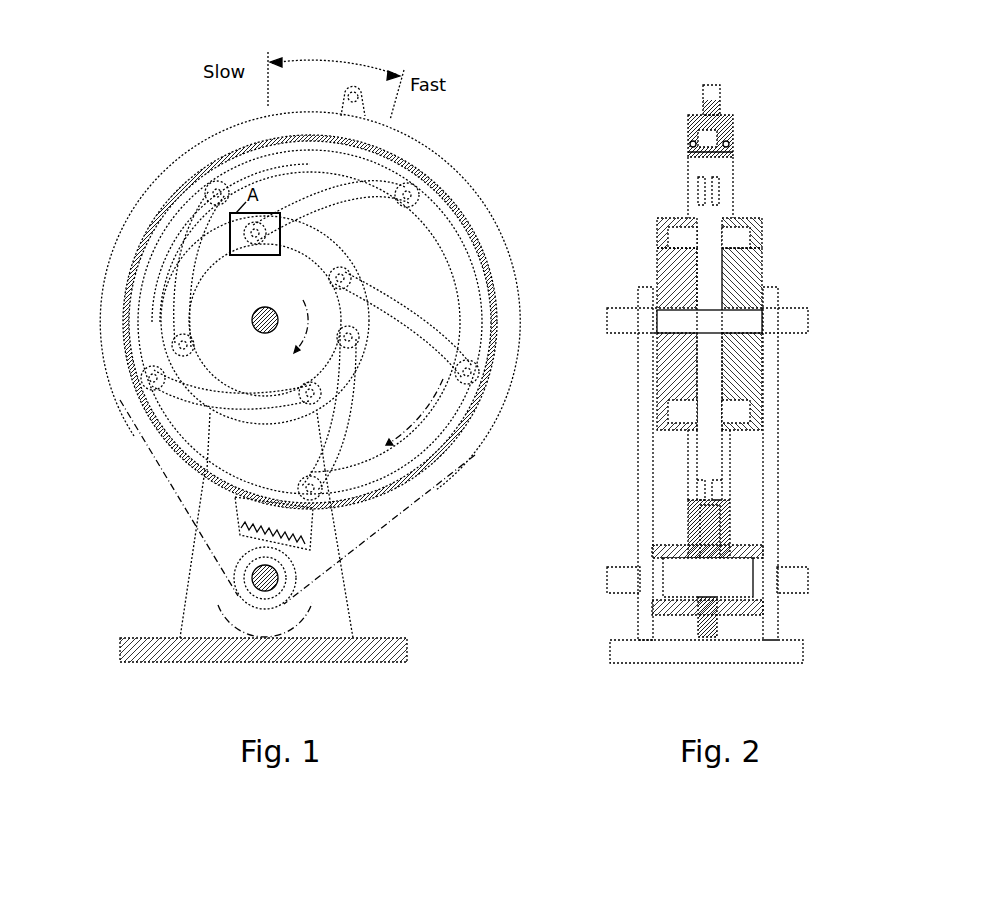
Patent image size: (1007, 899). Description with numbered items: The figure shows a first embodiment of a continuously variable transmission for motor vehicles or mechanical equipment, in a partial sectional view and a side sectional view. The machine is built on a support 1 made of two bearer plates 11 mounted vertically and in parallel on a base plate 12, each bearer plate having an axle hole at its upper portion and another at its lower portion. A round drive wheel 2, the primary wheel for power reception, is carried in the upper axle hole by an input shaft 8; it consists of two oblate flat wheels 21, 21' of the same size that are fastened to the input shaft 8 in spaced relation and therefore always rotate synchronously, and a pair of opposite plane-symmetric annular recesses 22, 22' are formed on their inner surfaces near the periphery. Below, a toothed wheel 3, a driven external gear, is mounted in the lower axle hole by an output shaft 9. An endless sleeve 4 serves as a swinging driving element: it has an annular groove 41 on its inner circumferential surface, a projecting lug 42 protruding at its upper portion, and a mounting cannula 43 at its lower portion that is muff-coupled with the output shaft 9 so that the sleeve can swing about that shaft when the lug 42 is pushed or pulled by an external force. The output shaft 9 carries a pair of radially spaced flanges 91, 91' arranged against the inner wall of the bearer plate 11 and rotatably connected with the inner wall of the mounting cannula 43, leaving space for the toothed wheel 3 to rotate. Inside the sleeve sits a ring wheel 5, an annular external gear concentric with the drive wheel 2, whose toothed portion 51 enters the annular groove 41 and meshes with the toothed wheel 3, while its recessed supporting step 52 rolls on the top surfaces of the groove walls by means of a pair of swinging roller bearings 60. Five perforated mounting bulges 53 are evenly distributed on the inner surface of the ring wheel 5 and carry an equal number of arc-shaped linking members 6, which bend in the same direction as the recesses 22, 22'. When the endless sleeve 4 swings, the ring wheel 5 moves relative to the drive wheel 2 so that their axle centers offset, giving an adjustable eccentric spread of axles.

In FIG. 2, the support 1 is at (793, 407).
In FIG. 1, the drive wheel 2 is at (350, 257).
In FIG. 2, the drive wheel 2 is at (657, 236).
In FIG. 1, the toothed wheel 3 is at (222, 595).
In FIG. 2, the toothed wheel 3 is at (705, 550).
In FIG. 1, the endless sleeve 4 is at (335, 545).
In FIG. 2, the endless sleeve 4 is at (692, 123).
In FIG. 1, the ring wheel 5 is at (272, 503).
In FIG. 2, the ring wheel 5 is at (688, 178).
In FIG. 1, the linking members 6 is at (348, 452).
In FIG. 2, the input shaft 8 is at (612, 313).
In FIG. 2, the output shaft 9 is at (607, 585).
In FIG. 2, the bearer plates 11 is at (643, 465).
In FIG. 2, the base plate 12 is at (782, 657).
In FIG. 1, the flat wheel 21 is at (217, 340).
In FIG. 2, the flat wheel 21 is at (635, 329).
In FIG. 2, the flat wheel 21' is at (784, 330).
In FIG. 1, the annular recess 22 is at (246, 333).
In FIG. 2, the annular recess 22 is at (635, 191).
In FIG. 2, the annular recess 22' is at (776, 213).
In FIG. 2, the annular groove 41 is at (720, 133).
In FIG. 1, the projecting lug 42 is at (352, 112).
In FIG. 2, the mounting cannula 43 is at (742, 547).
In FIG. 2, the toothed portion 51 is at (700, 133).
In FIG. 2, the supporting step 52 is at (730, 152).
In FIG. 1, the perforated mounting bulges 53 is at (473, 365).
In FIG. 2, the swinging roller bearings 60 is at (730, 143).
In FIG. 2, the flange 91 is at (653, 618).
In FIG. 2, the flange 91' is at (799, 561).